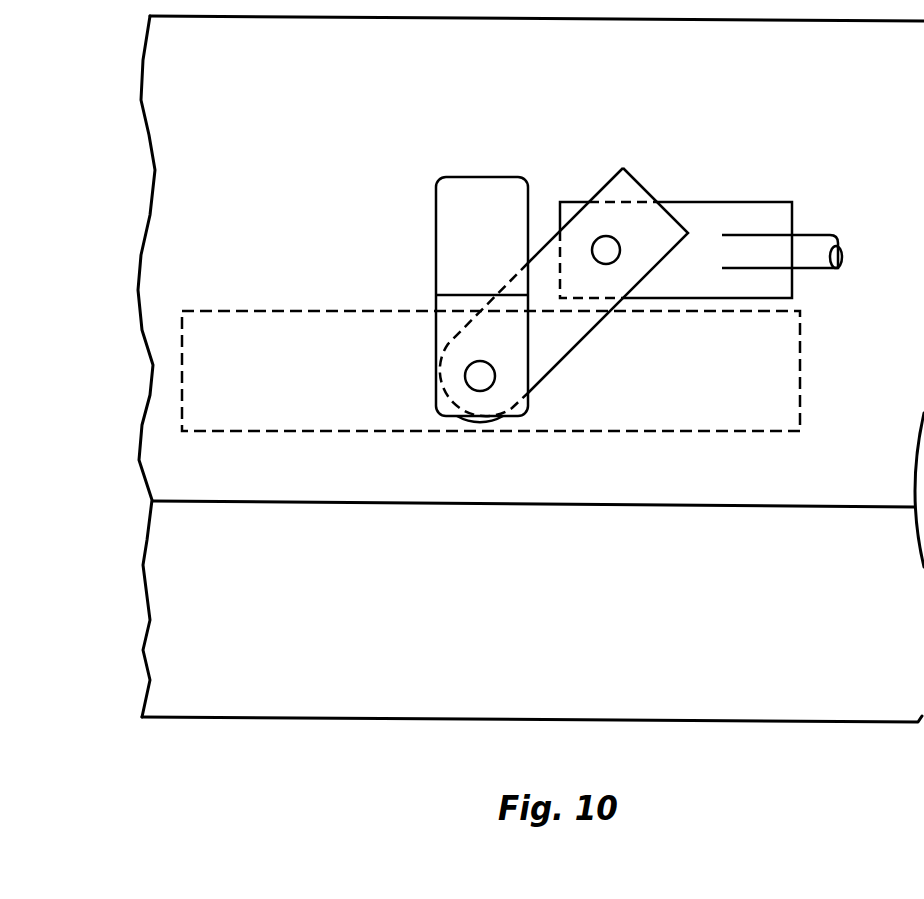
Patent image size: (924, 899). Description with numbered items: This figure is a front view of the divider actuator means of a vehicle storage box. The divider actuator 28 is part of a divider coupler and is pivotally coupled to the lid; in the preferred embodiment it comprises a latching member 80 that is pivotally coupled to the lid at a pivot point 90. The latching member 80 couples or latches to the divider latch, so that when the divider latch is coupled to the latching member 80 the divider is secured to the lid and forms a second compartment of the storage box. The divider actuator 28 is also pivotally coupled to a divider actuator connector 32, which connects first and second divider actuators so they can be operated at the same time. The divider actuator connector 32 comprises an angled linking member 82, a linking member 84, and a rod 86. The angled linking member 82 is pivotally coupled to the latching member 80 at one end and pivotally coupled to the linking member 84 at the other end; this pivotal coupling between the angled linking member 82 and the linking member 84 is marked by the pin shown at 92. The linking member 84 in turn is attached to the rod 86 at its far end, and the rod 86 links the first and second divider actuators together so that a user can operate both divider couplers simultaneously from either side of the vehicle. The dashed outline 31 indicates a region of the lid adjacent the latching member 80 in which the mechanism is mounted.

The divider actuator 28 is at (505, 128).
The slot region 31 is at (257, 390).
The divider actuator connector 32 is at (832, 163).
The latching member 80 is at (450, 257).
The angled linking member 82 is at (541, 352).
The linking member 84 is at (732, 216).
The rod 86 is at (818, 246).
The pivot point 90 is at (481, 380).
The pivot pin 92 is at (605, 254).